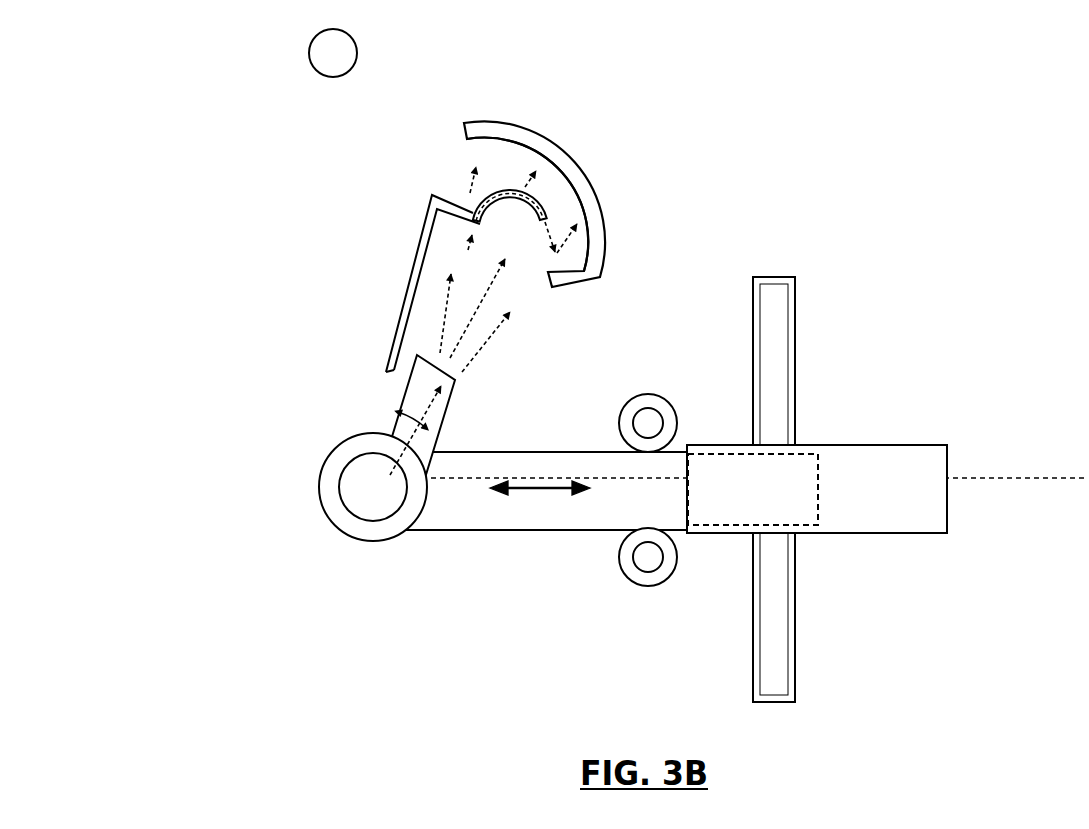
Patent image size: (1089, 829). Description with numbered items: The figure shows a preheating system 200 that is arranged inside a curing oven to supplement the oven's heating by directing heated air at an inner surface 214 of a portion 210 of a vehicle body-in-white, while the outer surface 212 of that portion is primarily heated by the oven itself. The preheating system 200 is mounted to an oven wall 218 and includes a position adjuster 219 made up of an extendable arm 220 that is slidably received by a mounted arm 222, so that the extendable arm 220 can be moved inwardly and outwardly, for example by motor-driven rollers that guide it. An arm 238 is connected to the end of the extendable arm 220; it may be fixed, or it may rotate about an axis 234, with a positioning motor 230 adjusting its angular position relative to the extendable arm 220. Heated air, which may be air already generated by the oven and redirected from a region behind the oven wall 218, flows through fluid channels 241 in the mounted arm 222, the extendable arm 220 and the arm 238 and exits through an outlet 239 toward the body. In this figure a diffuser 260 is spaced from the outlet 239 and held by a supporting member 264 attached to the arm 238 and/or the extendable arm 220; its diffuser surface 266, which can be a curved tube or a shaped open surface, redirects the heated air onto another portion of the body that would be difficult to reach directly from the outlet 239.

The preheating system 200 is at (256, 346).
The portion of a vehicle BIW 210 is at (575, 177).
The outer surface 212 is at (585, 180).
The inner surface 214 is at (527, 147).
The oven wall 218 is at (760, 632).
The position adjuster 219 is at (660, 457).
The extendable arm 220 is at (510, 529).
The mounted arm 222 is at (888, 445).
The positioning motor 230 is at (352, 540).
The axis 234 is at (340, 483).
The arm 238 is at (400, 378).
The outlet 239 is at (423, 358).
The fluid channels 241 is at (843, 510).
The diffuser 260 is at (430, 265).
The supporting member 264 is at (413, 267).
The diffuser surface 266 is at (492, 192).